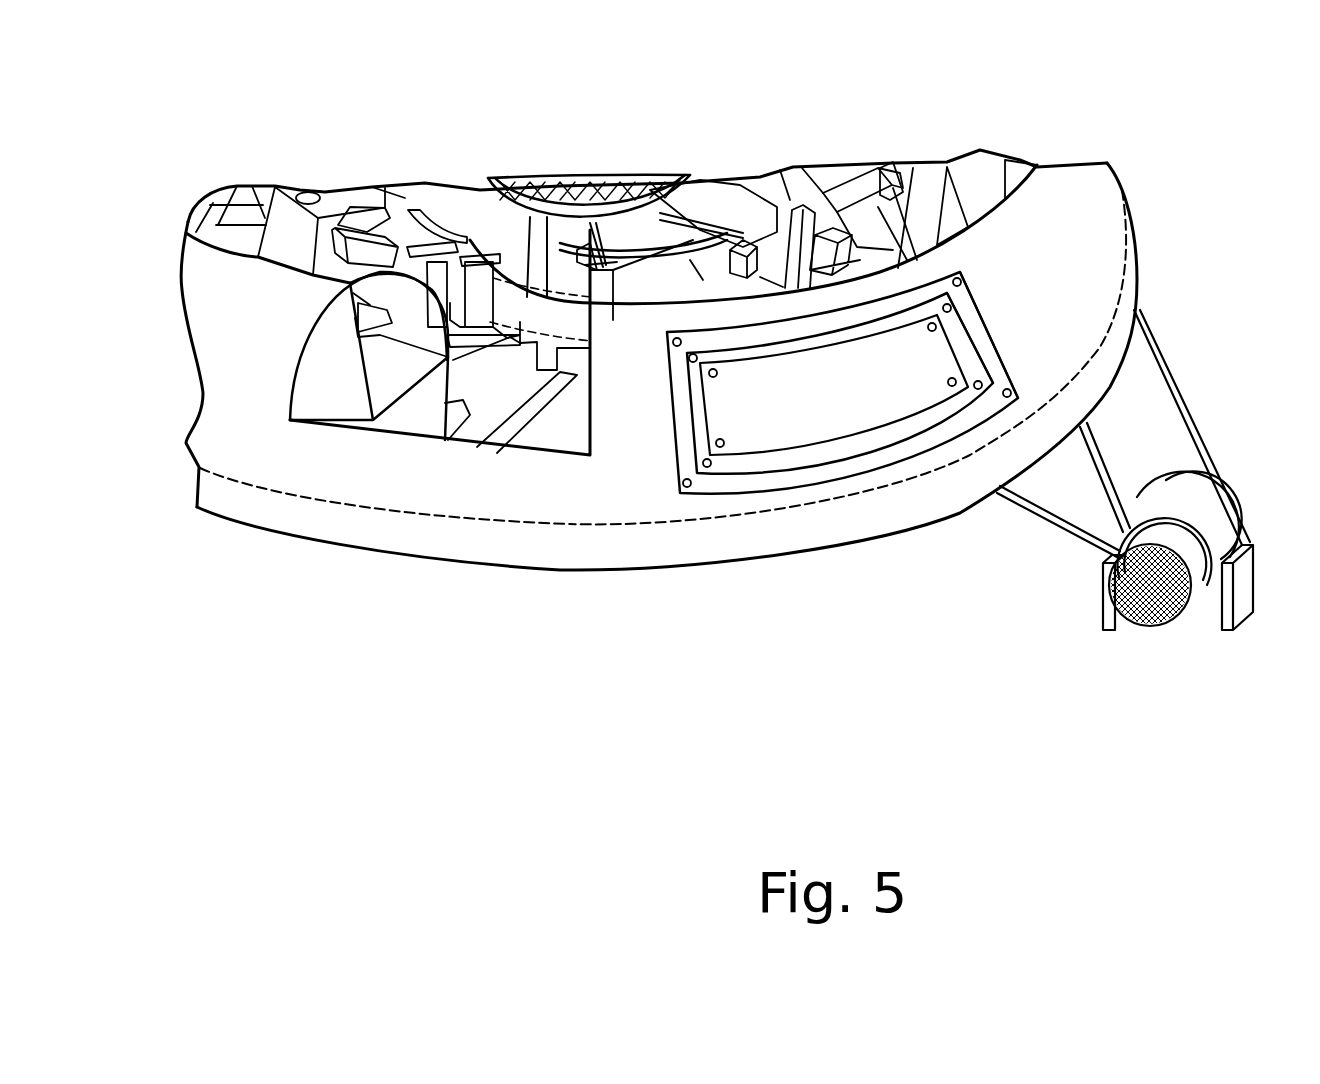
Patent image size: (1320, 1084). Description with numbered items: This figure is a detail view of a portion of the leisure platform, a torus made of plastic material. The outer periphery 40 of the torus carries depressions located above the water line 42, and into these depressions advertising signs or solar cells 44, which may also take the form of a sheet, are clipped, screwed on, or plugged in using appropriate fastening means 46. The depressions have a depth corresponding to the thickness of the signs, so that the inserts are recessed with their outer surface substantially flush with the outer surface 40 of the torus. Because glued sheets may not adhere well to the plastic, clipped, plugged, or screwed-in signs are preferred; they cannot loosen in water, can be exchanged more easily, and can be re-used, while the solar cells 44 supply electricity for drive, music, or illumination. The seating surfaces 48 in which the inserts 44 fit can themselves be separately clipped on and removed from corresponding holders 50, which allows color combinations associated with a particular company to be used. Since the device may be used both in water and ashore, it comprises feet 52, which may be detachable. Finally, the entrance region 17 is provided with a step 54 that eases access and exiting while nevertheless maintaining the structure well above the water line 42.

The entrance region 17 is at (338, 384).
The outer periphery of the torus 40 is at (1083, 223).
The water line 42 is at (308, 497).
The advertising signs or solar cells 44 is at (790, 417).
The fastening means 46 is at (712, 368).
The seating surfaces 48 is at (967, 360).
The holders 50 is at (678, 402).
The feet 52 is at (1108, 632).
The step 54 is at (363, 440).